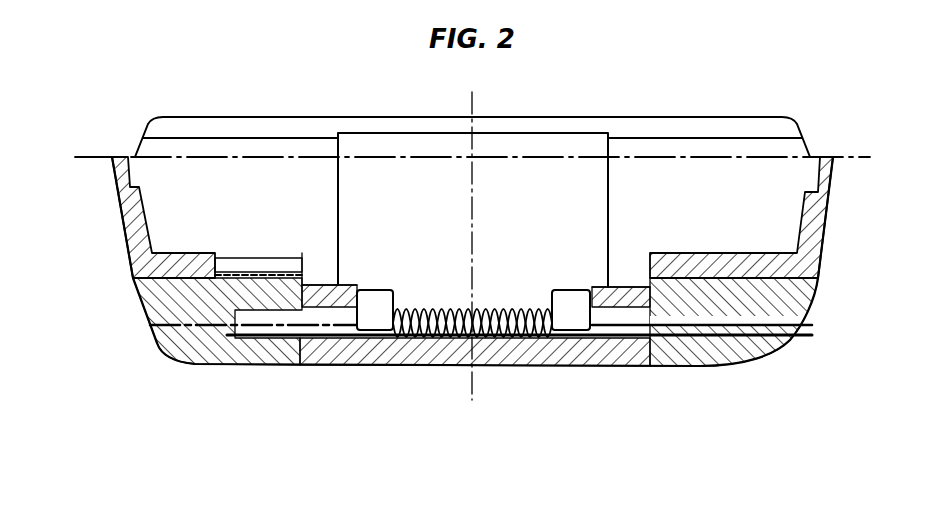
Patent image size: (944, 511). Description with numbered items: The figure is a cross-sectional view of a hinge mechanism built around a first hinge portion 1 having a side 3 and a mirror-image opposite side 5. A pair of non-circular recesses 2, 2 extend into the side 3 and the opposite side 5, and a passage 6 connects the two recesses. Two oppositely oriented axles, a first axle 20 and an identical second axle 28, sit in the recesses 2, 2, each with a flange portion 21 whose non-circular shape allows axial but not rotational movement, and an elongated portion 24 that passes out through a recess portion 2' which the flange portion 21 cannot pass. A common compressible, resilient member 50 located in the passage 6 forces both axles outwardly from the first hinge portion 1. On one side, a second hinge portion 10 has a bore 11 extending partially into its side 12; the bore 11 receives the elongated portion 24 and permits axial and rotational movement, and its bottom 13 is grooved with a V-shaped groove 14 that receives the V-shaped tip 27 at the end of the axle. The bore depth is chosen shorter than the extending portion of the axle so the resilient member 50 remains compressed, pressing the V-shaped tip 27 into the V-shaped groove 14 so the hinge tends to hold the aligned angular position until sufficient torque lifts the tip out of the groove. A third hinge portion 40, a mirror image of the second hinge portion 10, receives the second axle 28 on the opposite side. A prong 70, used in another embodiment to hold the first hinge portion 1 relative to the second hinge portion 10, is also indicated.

The first hinge portion 1 is at (545, 369).
The non-circular recess 2 is at (472, 259).
The recess portion 2' is at (423, 415).
The side 3 is at (643, 293).
The opposite side 5 is at (302, 260).
The passage 6 is at (446, 296).
The second hinge portion 10 is at (768, 360).
The bore 11 is at (712, 366).
The side 12 is at (671, 372).
The bottom 13 is at (808, 293).
The V-shaped groove 14 is at (200, 362).
The first axle 20 is at (603, 370).
The flange portion 21 is at (380, 305).
The elongated portion 24 is at (260, 272).
The V-shaped tip 27 is at (224, 268).
The second axle 28 is at (315, 362).
The third hinge portion 40 is at (143, 307).
The compressible, resilient member 50 is at (439, 366).
The prong 70 is at (140, 290).